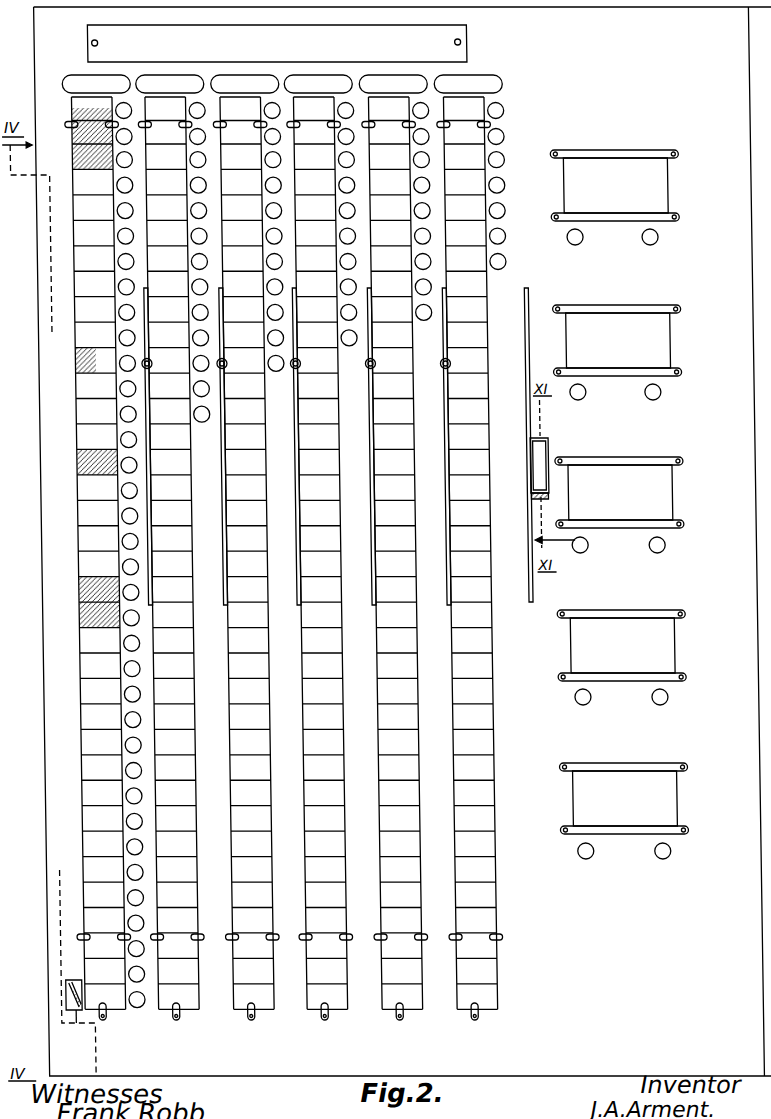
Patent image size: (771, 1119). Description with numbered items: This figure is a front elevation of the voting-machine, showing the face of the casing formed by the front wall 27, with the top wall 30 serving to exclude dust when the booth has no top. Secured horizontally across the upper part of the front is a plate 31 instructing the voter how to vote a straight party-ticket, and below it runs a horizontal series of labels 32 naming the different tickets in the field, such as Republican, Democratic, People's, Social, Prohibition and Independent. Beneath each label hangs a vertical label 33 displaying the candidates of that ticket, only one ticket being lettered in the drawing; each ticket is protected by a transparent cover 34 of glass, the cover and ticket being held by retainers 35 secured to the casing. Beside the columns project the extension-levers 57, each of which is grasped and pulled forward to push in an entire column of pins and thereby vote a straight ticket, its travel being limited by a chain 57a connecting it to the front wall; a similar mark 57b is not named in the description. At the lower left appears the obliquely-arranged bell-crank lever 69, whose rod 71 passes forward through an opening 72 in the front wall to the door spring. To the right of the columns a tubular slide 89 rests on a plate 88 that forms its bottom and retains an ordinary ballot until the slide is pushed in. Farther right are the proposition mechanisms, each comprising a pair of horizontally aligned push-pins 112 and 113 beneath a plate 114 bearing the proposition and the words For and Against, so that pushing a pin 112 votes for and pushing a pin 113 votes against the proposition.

The front wall 27 is at (34, 591).
The top wall 30 is at (200, 423).
The plate 31 is at (266, 25).
The labels 32 is at (69, 76).
The vertical labels 33 is at (70, 446).
The cover 34 is at (70, 466).
The retainers 35 is at (66, 128).
The extension-lever 57 is at (144, 563).
The chain 57a is at (147, 364).
The ring on bar 57b is at (440, 368).
The bell-crank lever 69 is at (51, 998).
The rod 71 is at (60, 981).
The opening 72 is at (74, 1030).
The plate 88 is at (542, 497).
The tubular slide 89 is at (543, 454).
The push-pins 112 is at (572, 245).
The push-pins 113 is at (650, 245).
The plates 114 is at (609, 155).